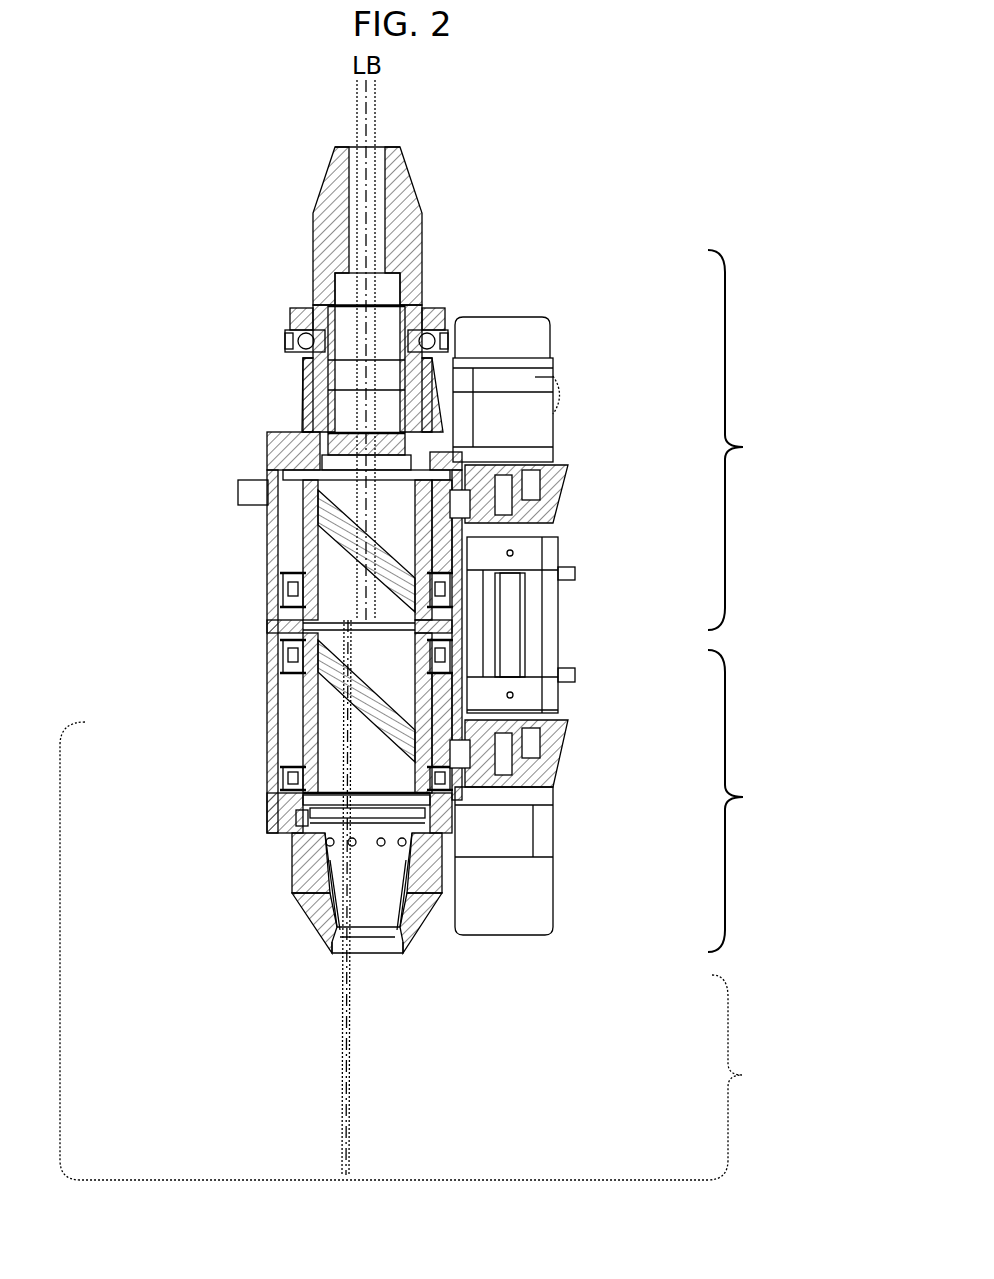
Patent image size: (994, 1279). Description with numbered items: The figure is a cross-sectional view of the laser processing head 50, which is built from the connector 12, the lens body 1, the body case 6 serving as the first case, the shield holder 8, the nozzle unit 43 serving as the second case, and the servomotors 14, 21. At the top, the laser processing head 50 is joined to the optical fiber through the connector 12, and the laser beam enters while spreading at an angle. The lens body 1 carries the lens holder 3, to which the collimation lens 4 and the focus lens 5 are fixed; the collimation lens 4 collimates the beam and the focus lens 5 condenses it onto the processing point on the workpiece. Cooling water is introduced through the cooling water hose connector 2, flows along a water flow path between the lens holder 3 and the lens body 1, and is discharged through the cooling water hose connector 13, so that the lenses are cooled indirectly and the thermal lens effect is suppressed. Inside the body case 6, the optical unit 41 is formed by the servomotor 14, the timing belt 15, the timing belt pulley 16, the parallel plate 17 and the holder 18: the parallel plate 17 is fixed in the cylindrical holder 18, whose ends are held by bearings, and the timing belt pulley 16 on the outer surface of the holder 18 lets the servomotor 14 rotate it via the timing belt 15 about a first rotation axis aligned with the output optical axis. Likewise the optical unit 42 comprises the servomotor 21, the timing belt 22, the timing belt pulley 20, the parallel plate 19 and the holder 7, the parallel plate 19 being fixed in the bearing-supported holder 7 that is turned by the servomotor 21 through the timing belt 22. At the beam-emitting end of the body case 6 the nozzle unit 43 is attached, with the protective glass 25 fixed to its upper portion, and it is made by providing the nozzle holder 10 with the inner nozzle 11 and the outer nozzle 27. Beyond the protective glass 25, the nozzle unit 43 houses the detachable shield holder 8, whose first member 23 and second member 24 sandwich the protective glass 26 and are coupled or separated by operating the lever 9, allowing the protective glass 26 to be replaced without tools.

The lens body 1 is at (313, 298).
The cooling water hose connector 2 is at (290, 327).
The lens holder 3 is at (323, 385).
The collimation lens 4 is at (327, 437).
The focus lens 5 is at (277, 457).
The body case 6 is at (265, 553).
The holder 7 is at (393, 704).
The shield holder 8 is at (267, 810).
The lever 9 is at (297, 818).
The nozzle holder 10 is at (290, 857).
The inner nozzle 11 is at (313, 895).
The connector 12 is at (407, 188).
The cooling water hose connector 13 is at (445, 315).
The servomotor 14 is at (548, 318).
The timing belt 15 is at (445, 498).
The timing belt pulley 16 is at (535, 490).
The parallel plate 17 is at (393, 543).
The holder 18 is at (437, 560).
The parallel plate 19 is at (437, 698).
The timing belt pulley 20 is at (543, 747).
The servomotor 21 is at (545, 812).
The timing belt 22 is at (437, 745).
The first member 23 is at (388, 798).
The second member 24 is at (405, 812).
The protective glass 25 is at (407, 814).
The protective glass 26 is at (375, 820).
The outer nozzle 27 is at (327, 945).
The optical unit 41 is at (627, 481).
The optical unit 42 is at (748, 801).
The nozzle unit 43 is at (429, 951).
The laser processing head 50 is at (141, 77).